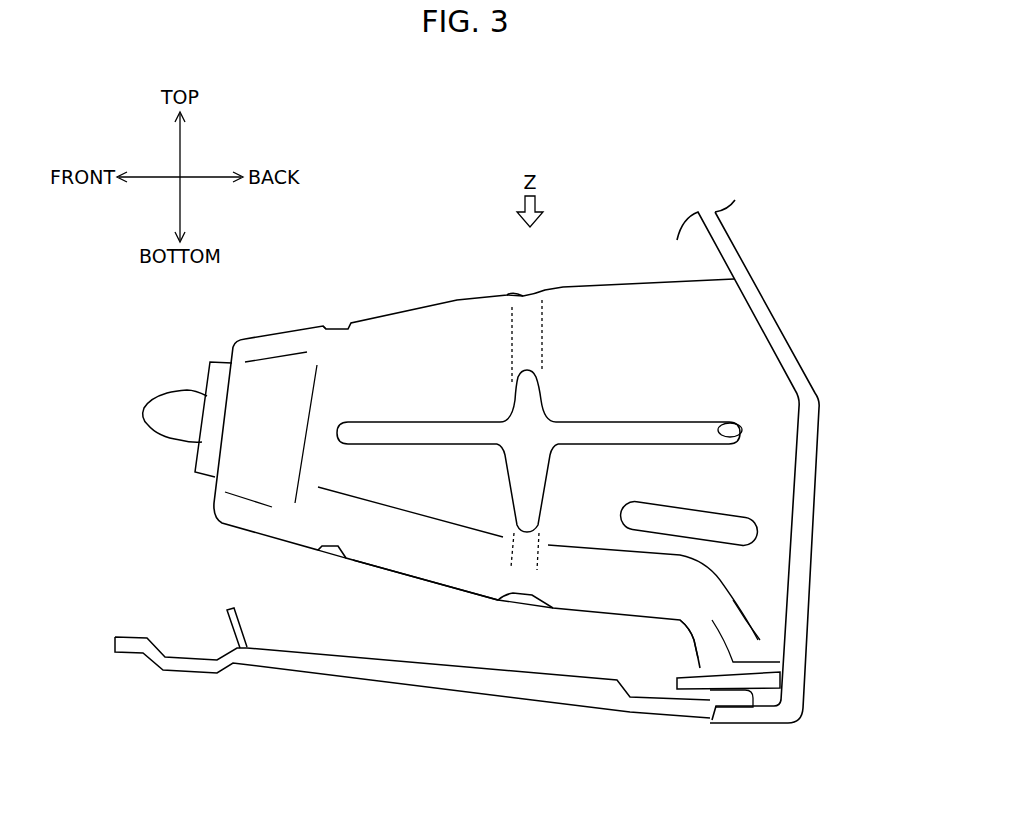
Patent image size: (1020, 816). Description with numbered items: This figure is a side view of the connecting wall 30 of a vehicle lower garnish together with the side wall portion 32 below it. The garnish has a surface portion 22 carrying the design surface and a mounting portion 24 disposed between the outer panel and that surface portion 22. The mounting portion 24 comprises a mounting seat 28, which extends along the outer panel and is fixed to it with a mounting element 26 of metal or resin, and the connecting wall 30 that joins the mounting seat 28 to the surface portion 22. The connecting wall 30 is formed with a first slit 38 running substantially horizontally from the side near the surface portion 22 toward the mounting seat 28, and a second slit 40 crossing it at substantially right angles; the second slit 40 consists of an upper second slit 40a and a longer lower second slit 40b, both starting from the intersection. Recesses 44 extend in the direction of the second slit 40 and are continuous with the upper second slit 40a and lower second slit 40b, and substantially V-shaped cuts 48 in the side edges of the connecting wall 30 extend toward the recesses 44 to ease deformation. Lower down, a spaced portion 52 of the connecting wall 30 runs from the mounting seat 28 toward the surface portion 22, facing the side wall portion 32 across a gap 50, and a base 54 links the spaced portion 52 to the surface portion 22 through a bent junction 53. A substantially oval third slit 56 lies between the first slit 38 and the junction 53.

The surface portion 22 is at (810, 560).
The mounting portion 24 is at (412, 279).
The mounting element 26 is at (175, 422).
The mounting seat 28 is at (207, 492).
The connecting wall 30 is at (462, 297).
The side wall portion 32 is at (387, 677).
The first slit 38 is at (743, 433).
The second slit 40 is at (555, 470).
The upper second slit 40a is at (547, 407).
The lower second slit 40b is at (508, 487).
The recess 44 is at (537, 350).
The cut 48 is at (337, 323).
The gap 50 is at (375, 634).
The spaced portion 52 is at (413, 580).
The junction 53 is at (677, 627).
The base 54 is at (700, 660).
The third slit 56 is at (753, 547).